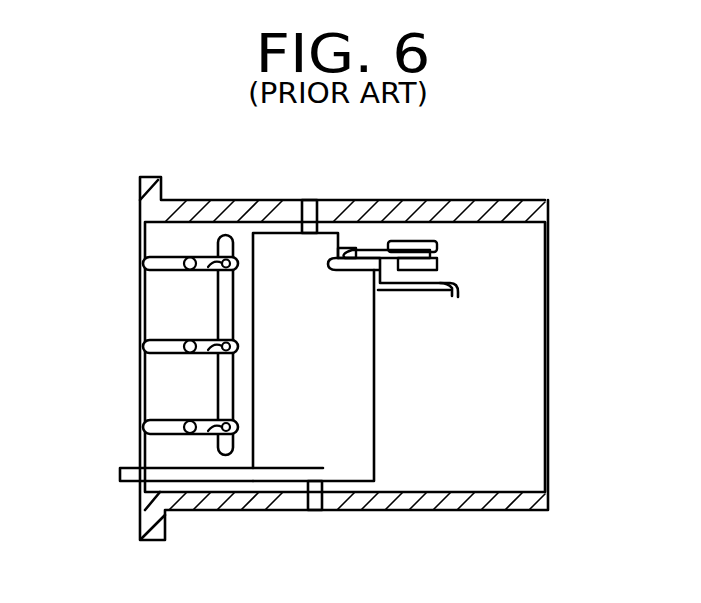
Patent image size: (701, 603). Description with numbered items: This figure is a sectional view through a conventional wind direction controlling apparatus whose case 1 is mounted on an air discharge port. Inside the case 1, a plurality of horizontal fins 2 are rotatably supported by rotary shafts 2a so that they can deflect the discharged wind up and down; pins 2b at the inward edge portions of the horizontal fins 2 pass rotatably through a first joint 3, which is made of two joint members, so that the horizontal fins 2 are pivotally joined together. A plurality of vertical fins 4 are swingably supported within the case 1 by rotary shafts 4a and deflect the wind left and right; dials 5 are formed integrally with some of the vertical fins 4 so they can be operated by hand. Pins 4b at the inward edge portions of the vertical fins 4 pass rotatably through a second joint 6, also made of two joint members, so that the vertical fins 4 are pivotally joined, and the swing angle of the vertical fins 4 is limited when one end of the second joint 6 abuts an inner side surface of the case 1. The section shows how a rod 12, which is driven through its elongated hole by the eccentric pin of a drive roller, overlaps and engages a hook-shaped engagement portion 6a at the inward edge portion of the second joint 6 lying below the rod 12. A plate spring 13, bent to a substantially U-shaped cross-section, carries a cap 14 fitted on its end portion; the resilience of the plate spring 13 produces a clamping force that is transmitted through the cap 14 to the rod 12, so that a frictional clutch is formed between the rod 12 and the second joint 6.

The case 1 is at (142, 177).
The horizontal fins 2 is at (158, 270).
The rotary shafts 2a is at (185, 257).
The pins 2b is at (212, 273).
The first joint 3 is at (225, 235).
The vertical fins 4 is at (374, 372).
The rotary shafts 4a is at (308, 200).
The pins 4b is at (350, 248).
The dials 5 is at (140, 476).
The second joint 6 is at (330, 268).
The hook-shaped engagement portion 6a is at (448, 276).
The rod 12 is at (440, 258).
The plate spring 13 is at (382, 248).
The cap 14 is at (422, 241).